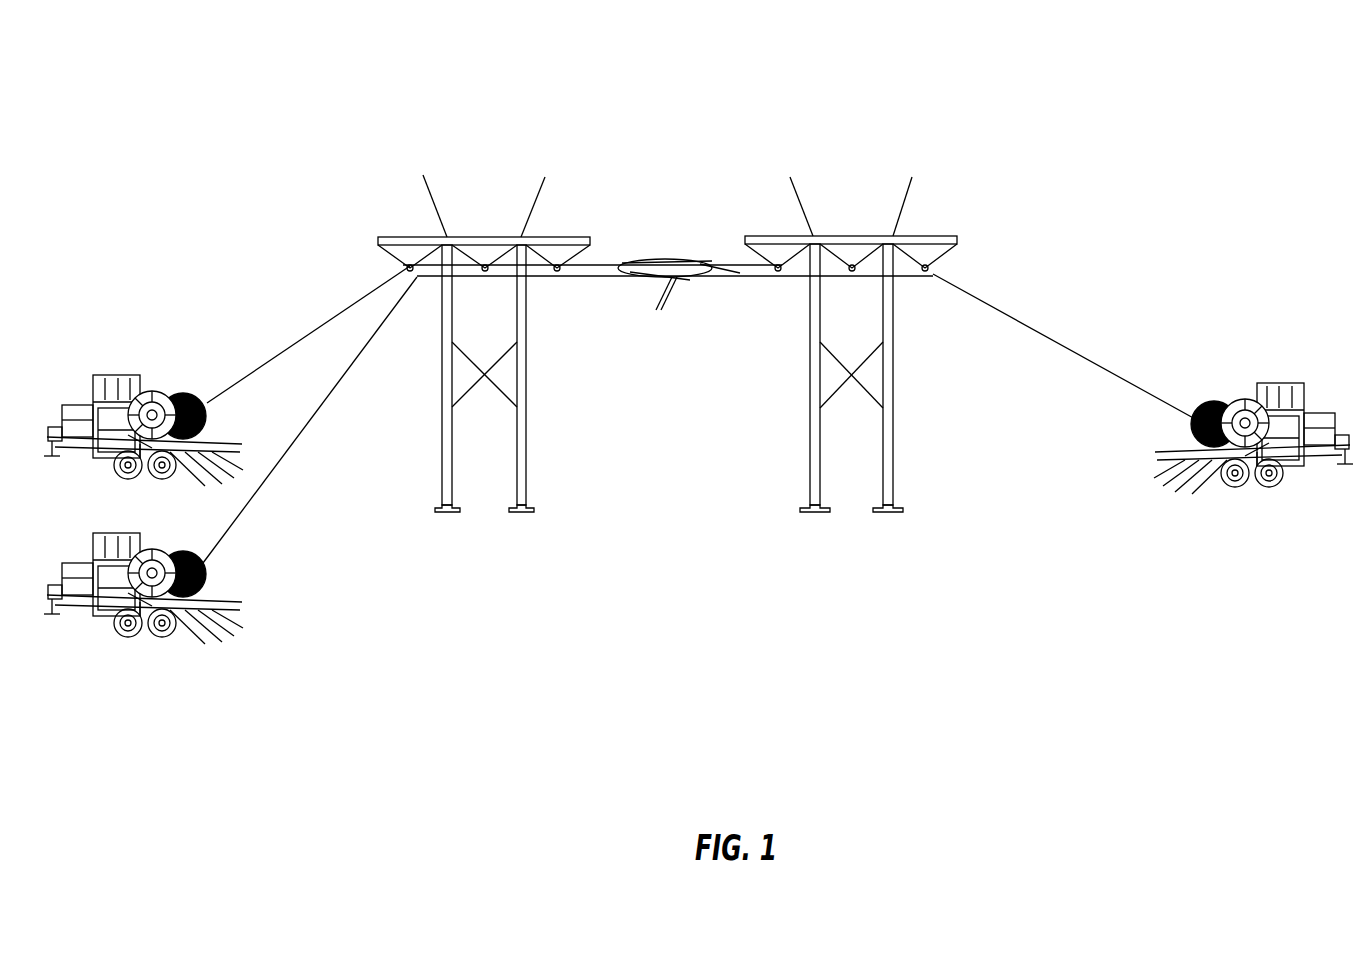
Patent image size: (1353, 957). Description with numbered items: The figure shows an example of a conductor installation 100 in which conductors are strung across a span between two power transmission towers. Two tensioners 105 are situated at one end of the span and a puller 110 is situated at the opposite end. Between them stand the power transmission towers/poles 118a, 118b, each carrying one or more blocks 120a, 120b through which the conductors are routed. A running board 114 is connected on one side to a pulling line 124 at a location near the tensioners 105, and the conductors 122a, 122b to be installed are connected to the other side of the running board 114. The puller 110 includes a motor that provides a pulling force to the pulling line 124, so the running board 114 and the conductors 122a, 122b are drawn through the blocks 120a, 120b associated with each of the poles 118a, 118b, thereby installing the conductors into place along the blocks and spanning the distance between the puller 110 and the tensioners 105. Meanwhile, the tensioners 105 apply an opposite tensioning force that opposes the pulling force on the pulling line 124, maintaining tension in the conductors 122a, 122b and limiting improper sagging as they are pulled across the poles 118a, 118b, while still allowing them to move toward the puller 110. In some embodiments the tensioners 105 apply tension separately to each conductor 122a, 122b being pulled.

The conductor installation 100 is at (247, 137).
The tensioner 105 is at (178, 392).
The puller 110 is at (1236, 490).
The running board 114 is at (670, 256).
The power transmission tower 118a is at (405, 227).
The power transmission tower 118b is at (930, 228).
The block 120a is at (485, 262).
The block 120b is at (852, 264).
The conductor 122a is at (285, 348).
The conductor 122b is at (367, 347).
The pulling line 124 is at (1073, 349).